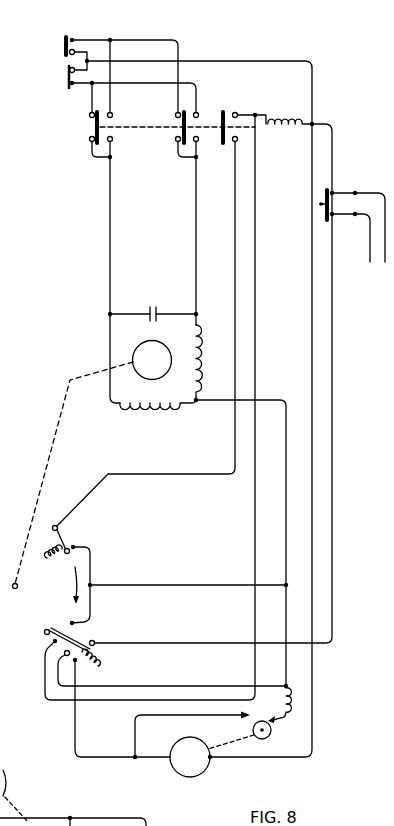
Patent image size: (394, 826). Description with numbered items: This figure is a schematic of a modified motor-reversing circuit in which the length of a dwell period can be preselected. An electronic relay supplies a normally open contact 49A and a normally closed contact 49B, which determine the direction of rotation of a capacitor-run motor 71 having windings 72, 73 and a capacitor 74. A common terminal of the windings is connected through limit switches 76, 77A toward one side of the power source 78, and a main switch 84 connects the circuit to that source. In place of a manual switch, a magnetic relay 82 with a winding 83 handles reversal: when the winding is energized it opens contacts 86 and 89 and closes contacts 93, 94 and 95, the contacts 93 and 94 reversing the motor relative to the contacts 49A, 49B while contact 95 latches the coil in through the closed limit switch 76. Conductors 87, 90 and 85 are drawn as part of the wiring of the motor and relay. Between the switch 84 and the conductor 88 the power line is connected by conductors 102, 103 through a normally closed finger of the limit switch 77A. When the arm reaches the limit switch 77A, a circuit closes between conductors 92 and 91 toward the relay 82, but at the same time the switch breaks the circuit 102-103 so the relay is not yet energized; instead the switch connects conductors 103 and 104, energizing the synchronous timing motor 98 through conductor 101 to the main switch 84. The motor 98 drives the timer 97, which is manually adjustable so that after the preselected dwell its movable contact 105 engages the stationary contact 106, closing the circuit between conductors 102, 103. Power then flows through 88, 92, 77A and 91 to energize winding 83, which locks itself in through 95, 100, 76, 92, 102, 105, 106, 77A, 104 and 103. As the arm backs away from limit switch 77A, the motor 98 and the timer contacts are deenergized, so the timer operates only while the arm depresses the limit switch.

The normally open contact 49A is at (92, 74).
The normally closed contact 49B is at (101, 86).
The conductor 85 is at (252, 61).
The magnetic relay 82 is at (293, 106).
The relay winding 83 is at (276, 131).
The main switch 84 is at (335, 190).
The power source 78 is at (385, 247).
The relay contact 86 is at (90, 115).
The relay contact 93 is at (122, 101).
The relay contact 89 is at (176, 113).
The relay contact 94 is at (198, 113).
The relay latching contact 95 is at (235, 112).
The conductor 87 is at (110, 244).
The conductor 90 is at (196, 229).
The capacitor 74 is at (153, 304).
The capacitor-run motor 71 is at (98, 357).
The motor winding 72 is at (211, 363).
The motor winding 73 is at (148, 410).
The conductor 88 is at (268, 400).
The conductor 100 is at (235, 458).
The conductor 101 is at (312, 322).
The conductor 103 is at (332, 342).
The conductor 91 is at (255, 503).
The limit switch 76 is at (64, 533).
The conductor 92 is at (160, 585).
The limit switch 77A is at (100, 653).
The conductor 102 is at (284, 683).
The conductor 104 is at (75, 725).
The stationary contact 106 is at (245, 719).
The movable contact 105 is at (273, 722).
The timer 97 is at (264, 740).
The synchronous timing motor 98 is at (172, 767).